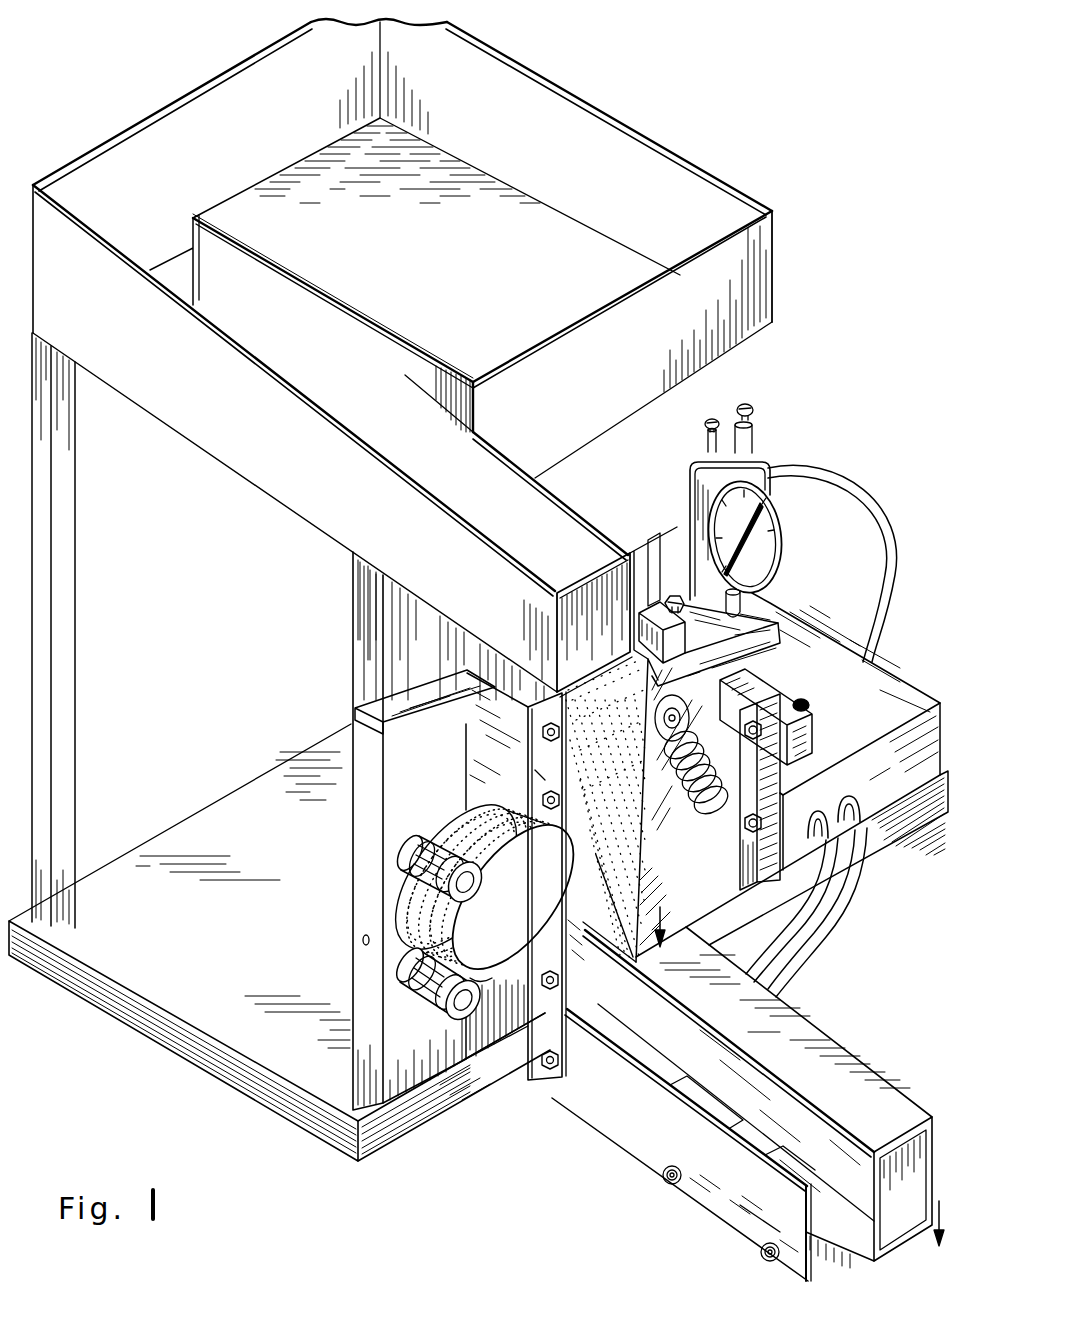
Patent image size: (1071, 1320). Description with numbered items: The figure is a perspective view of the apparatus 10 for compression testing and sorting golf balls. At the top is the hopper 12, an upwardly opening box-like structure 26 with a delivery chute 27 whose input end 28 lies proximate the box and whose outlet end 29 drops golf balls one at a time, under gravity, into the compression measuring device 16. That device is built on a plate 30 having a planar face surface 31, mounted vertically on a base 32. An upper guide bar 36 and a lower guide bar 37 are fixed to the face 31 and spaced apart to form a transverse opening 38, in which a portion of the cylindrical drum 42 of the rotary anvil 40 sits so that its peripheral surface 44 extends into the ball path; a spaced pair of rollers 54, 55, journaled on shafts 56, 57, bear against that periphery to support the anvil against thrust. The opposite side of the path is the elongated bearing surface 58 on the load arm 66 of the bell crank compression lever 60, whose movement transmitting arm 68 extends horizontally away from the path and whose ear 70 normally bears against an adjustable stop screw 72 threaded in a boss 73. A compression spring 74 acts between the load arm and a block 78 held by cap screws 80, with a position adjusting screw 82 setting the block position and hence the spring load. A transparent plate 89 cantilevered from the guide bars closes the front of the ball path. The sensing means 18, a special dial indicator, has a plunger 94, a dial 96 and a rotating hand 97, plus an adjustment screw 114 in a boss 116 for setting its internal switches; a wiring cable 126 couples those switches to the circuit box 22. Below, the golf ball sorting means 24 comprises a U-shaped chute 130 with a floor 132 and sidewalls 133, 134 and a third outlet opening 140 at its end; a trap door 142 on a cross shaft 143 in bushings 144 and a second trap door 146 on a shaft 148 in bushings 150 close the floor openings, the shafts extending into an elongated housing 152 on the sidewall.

The apparatus 10 is at (127, 1079).
The hopper 12 is at (742, 157).
The compression measuring device 16 is at (351, 734).
The sensing means 18 is at (680, 489).
The circuit box 22 is at (821, 632).
The golf ball sorting means 24 is at (872, 1048).
The box-like structure 26 is at (748, 262).
The delivery chute 27 is at (187, 440).
The input end 28 is at (185, 262).
The outlet end 29 is at (563, 497).
The plate 30 is at (367, 811).
The planar face surface 31 is at (422, 1090).
The base 32 is at (227, 789).
The upper guide bar 36 is at (480, 745).
The lower guide bar 37 is at (509, 1076).
The transverse opening 38 is at (487, 797).
The rotary anvil 40 is at (401, 945).
The cylindrical drum 42 is at (516, 990).
The peripheral surface 44 is at (463, 822).
The roller 54 is at (400, 870).
The roller 55 is at (407, 999).
The shaft 56 is at (475, 890).
The shaft 57 is at (481, 969).
The elongated bearing surface 58 is at (599, 968).
The compression lever 60 is at (665, 872).
The load arm 66 is at (670, 906).
The movement transmitting arm 68 is at (748, 658).
The ear 70 is at (660, 677).
The adjustable stop screw 72 is at (677, 592).
The boss 73 is at (641, 606).
The compression spring 74 is at (678, 815).
The block 78 is at (726, 822).
The cap screws 80 is at (750, 814).
The position adjusting screw 82 is at (812, 703).
The plate 89 is at (538, 775).
The plunger 94 is at (763, 597).
The dial 96 is at (762, 549).
The rotating hand 97 is at (766, 518).
The adjustment screw 114 is at (750, 406).
The boss 116 is at (753, 427).
The wiring cable 126 is at (876, 507).
The chute 130 is at (583, 1083).
The floor 132 is at (650, 1121).
The sidewall 133 is at (606, 1101).
The sidewall 134 is at (797, 1121).
The third outlet opening 140 is at (828, 1223).
The trap door 142 is at (657, 1080).
The cross shaft 143 is at (664, 1179).
The bushings 144 is at (675, 1190).
The trap door 146 is at (799, 1172).
The shaft 148 is at (761, 1252).
The bushings 150 is at (768, 1265).
The elongated housing 152 is at (879, 1088).